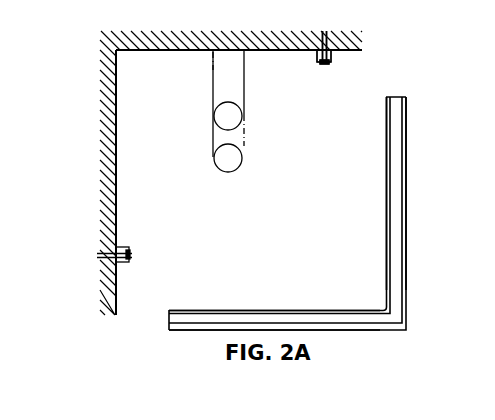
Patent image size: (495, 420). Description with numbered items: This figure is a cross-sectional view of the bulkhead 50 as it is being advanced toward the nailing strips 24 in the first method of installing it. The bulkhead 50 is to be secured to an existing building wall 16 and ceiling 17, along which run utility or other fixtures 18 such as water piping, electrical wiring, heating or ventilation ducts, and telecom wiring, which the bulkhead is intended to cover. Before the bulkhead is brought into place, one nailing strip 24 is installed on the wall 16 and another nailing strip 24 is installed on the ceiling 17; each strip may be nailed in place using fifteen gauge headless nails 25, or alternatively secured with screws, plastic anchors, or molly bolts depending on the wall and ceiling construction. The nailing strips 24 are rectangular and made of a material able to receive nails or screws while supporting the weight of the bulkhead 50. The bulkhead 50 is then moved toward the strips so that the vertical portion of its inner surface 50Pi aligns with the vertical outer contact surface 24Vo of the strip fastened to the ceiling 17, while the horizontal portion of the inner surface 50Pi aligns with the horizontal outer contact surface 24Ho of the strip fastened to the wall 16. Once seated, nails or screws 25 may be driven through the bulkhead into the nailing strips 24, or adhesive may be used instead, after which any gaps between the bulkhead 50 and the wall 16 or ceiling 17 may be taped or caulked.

The building wall 16 is at (118, 160).
The ceiling 17 is at (183, 57).
The utility or other fixtures 18 is at (227, 118).
The nailing strip 24 is at (316, 56).
The vertical outer contact surface 24Vo is at (335, 58).
The horizontal outer contact surface 24Ho is at (130, 262).
The headless nails 25 is at (328, 67).
The bulkhead 50 is at (408, 222).
The inner surface 50Pi is at (262, 310).